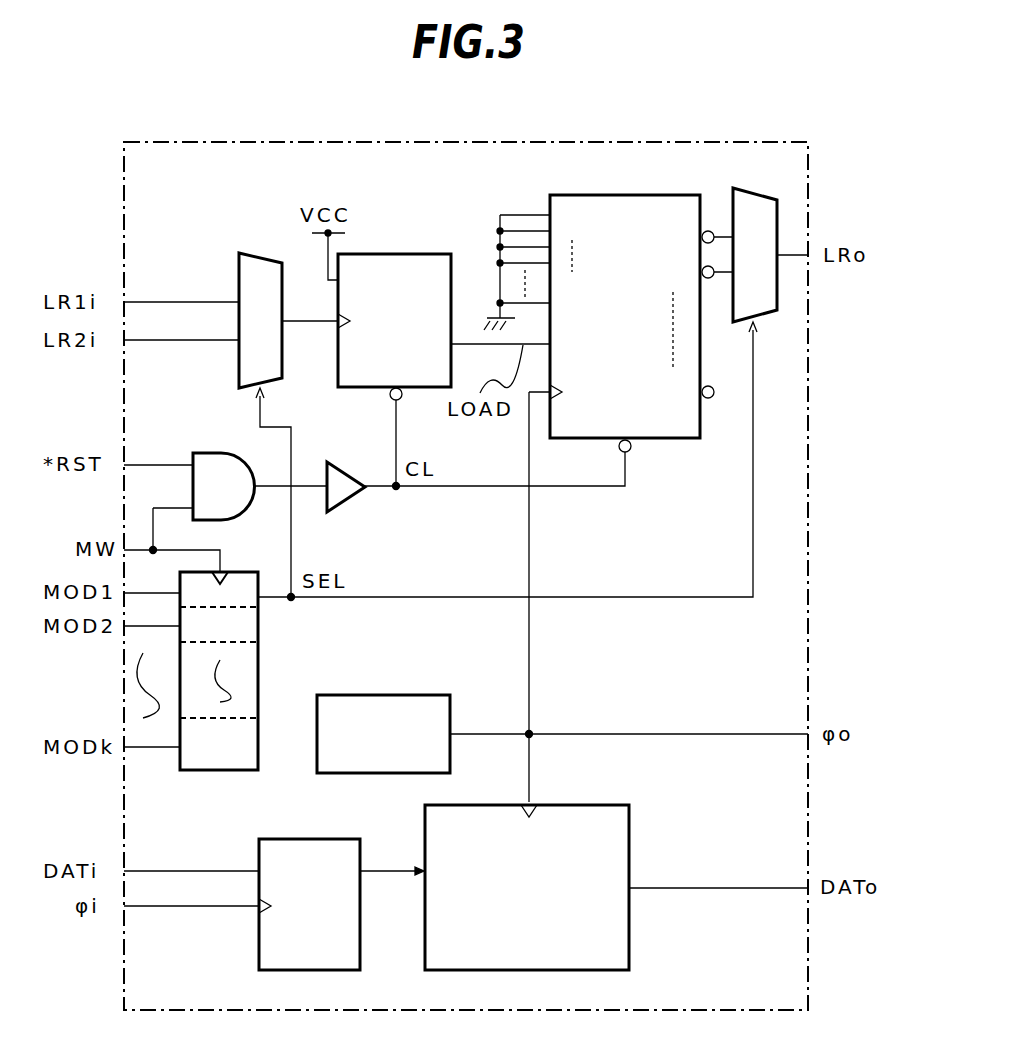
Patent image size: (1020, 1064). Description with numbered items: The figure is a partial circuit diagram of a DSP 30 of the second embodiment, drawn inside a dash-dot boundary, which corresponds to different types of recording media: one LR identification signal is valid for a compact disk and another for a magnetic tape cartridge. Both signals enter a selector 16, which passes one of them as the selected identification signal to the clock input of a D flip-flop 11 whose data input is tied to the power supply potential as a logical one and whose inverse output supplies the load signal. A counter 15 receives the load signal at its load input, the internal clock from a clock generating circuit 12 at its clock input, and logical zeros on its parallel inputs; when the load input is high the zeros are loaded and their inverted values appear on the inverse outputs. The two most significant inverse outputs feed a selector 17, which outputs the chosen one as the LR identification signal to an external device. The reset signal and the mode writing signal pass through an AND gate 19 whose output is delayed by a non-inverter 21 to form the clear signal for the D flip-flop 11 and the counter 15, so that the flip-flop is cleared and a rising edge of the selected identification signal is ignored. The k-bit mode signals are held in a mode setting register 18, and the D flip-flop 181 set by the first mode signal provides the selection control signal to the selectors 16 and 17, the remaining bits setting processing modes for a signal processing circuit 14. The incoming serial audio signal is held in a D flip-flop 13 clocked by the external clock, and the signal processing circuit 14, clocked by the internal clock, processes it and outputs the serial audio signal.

The DSP 30 is at (590, 142).
The selector 16 is at (253, 252).
The D flip-flop 11 is at (392, 254).
The counter 15 is at (673, 438).
The selector 17 is at (770, 197).
The AND gate 19 is at (223, 453).
The non-inverter 21 is at (352, 464).
The mode setting register 18 is at (258, 680).
The D flip-flop 181 is at (242, 587).
The clock generating circuit 12 is at (388, 695).
The D flip-flop 13 is at (315, 839).
The signal processing circuit 14 is at (602, 805).